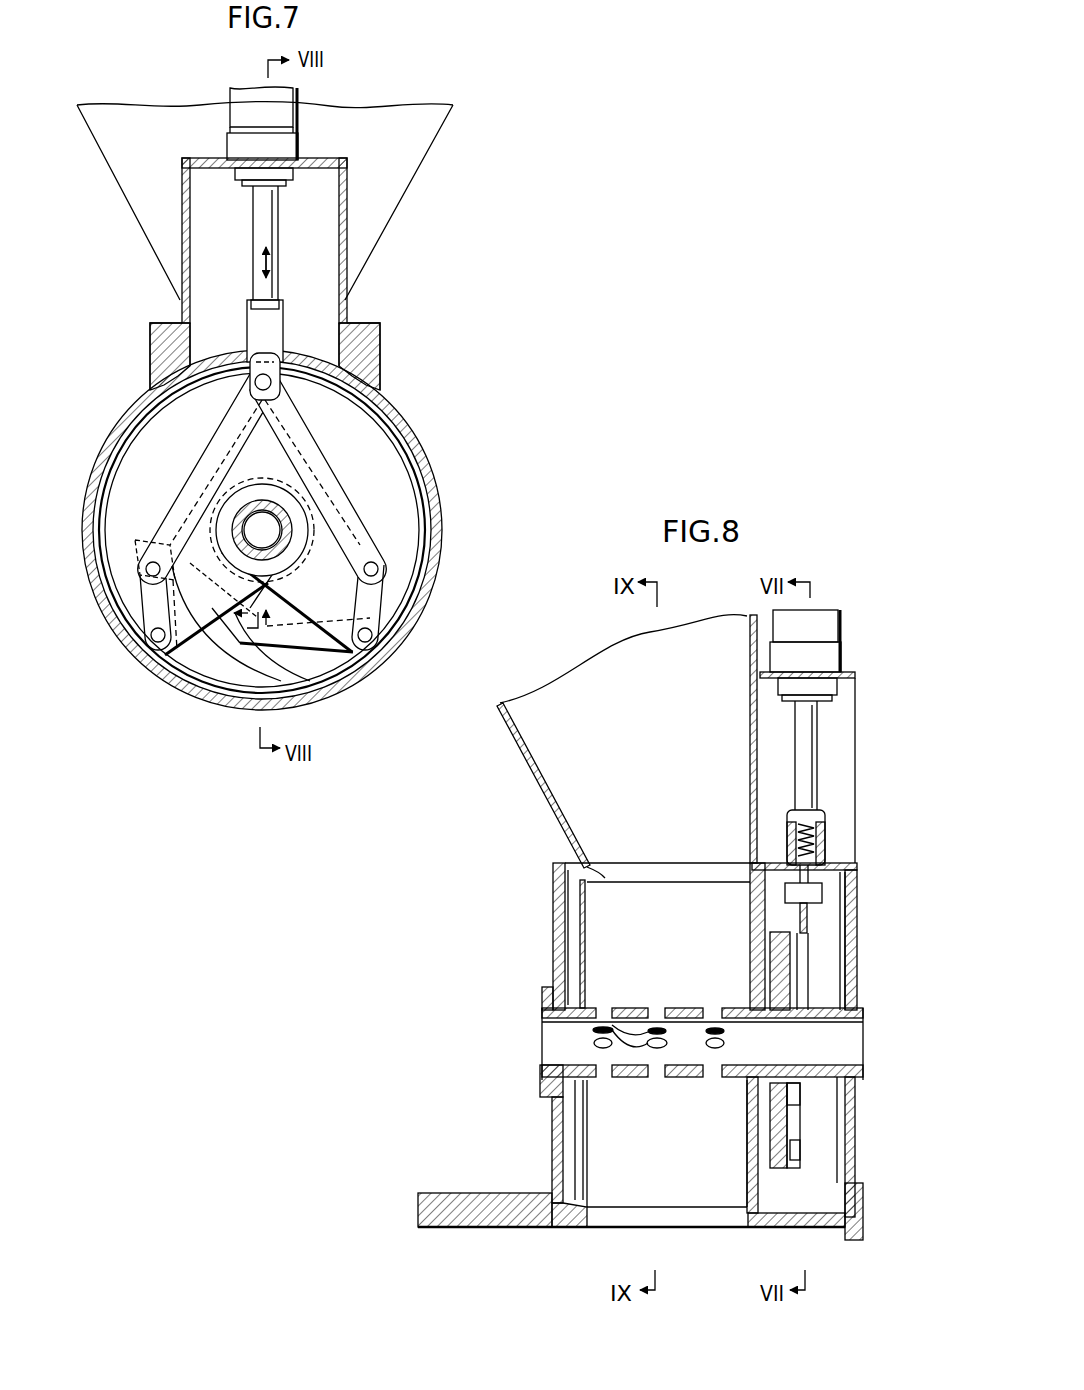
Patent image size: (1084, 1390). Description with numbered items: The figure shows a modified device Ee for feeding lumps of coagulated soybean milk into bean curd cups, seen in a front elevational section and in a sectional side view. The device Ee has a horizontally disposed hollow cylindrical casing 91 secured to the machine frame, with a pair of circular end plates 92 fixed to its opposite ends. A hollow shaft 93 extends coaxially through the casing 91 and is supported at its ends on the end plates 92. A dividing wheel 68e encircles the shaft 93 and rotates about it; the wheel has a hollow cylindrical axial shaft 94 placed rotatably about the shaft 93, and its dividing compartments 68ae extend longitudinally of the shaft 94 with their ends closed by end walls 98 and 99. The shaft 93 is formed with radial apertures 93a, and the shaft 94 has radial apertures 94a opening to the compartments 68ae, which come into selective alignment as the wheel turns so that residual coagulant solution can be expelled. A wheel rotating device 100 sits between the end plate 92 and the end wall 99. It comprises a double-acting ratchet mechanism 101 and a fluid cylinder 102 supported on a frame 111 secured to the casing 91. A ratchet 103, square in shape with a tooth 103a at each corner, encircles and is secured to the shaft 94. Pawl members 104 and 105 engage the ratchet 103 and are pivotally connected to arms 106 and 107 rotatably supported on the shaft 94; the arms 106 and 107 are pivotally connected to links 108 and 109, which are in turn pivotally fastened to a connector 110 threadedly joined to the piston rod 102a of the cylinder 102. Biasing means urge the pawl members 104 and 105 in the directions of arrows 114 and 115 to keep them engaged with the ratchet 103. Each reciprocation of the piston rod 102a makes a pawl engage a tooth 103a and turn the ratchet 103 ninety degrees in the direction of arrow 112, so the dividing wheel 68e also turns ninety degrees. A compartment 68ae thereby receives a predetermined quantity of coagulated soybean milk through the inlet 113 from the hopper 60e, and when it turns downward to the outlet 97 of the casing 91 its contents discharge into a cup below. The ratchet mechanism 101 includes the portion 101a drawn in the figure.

In FIG. 7, the hopper 60e is at (431, 148).
In FIG. 8, the hopper 60e is at (528, 762).
In FIG. 7, the device for feeding lumps of coagulated soybean milk Ee is at (192, 98).
In FIG. 8, the device for feeding lumps of coagulated soybean milk Ee is at (626, 648).
In FIG. 7, the fluid cylinder 102 is at (287, 110).
In FIG. 8, the fluid cylinder 102 is at (829, 628).
In FIG. 7, the piston rod 102a is at (257, 212).
In FIG. 8, the piston rod 102a is at (812, 748).
In FIG. 7, the frame 111 is at (347, 246).
In FIG. 8, the frame 111 is at (841, 673).
In FIG. 7, the wheel rotating device 100 is at (149, 287).
In FIG. 7, the connector 110 is at (253, 322).
In FIG. 8, the connector 110 is at (823, 835).
In FIG. 7, the link 108 is at (213, 448).
In FIG. 8, the link 108 is at (808, 921).
In FIG. 7, the double-acting ratchet mechanism 101 is at (148, 478).
In FIG. 7, the arm portion 101a is at (150, 512).
In FIG. 7, the link 109 is at (327, 463).
In FIG. 8, the link 109 is at (803, 968).
In FIG. 7, the hollow cylindrical casing 91 is at (441, 457).
In FIG. 8, the hollow cylindrical casing 91 is at (828, 1227).
In FIG. 7, the arm 107 is at (327, 562).
In FIG. 8, the arm 107 is at (796, 1112).
In FIG. 7, the arrow 114 is at (135, 540).
In FIG. 7, the arm 106 is at (145, 583).
In FIG. 7, the pawl member 104 is at (145, 628).
In FIG. 7, the pawl member 105 is at (370, 670).
In FIG. 7, the axial shaft 94 is at (262, 588).
In FIG. 8, the axial shaft 94 is at (814, 1025).
In FIG. 7, the hollow shaft 93 is at (197, 565).
In FIG. 8, the hollow shaft 93 is at (864, 1022).
In FIG. 7, the ratchet 103 is at (200, 642).
In FIG. 8, the ratchet 103 is at (786, 1128).
In FIG. 7, the tooth 103a is at (228, 690).
In FIG. 7, the arrow 112 is at (285, 645).
In FIG. 7, the arrow 115 is at (300, 652).
In FIG. 8, the inlet 113 is at (603, 863).
In FIG. 8, the dividing compartment 68ae is at (604, 915).
In FIG. 8, the apertures 93a is at (626, 1008).
In FIG. 8, the apertures 94a is at (718, 1006).
In FIG. 8, the circular end plate 92 is at (540, 1086).
In FIG. 8, the dividing wheel 68e is at (608, 1190).
In FIG. 8, the outlet 97 is at (647, 1217).
In FIG. 8, the end wall 98 is at (587, 1228).
In FIG. 8, the end wall 99 is at (740, 1225).